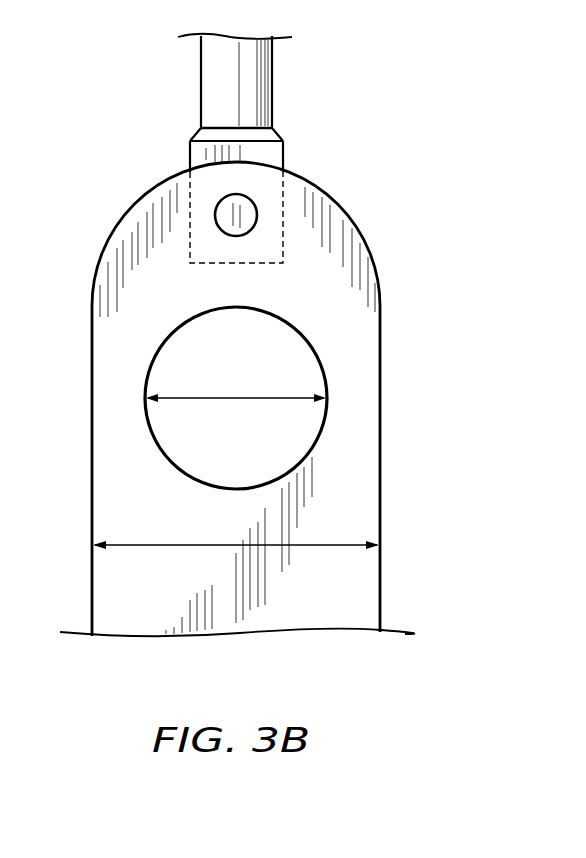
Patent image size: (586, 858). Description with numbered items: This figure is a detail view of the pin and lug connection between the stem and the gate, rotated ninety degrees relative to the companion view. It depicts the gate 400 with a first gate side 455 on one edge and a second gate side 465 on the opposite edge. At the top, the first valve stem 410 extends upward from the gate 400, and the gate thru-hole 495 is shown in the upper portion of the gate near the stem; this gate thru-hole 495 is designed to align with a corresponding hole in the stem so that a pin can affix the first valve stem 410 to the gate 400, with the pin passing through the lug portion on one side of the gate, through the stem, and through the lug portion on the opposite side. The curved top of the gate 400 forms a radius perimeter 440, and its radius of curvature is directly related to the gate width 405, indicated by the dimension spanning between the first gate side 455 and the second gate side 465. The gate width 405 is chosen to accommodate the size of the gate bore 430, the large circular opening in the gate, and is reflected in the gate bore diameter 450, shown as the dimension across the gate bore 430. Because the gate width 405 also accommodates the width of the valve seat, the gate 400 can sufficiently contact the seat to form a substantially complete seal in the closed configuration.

The first valve stem 410 is at (258, 85).
The gate thru-hole 495 is at (243, 213).
The gate 400 is at (120, 235).
The radius perimeter 440 is at (363, 232).
The gate bore 430 is at (285, 370).
The gate bore diameter 450 is at (193, 396).
The first gate side 455 is at (92, 447).
The second gate side 465 is at (383, 468).
The gate width 405 is at (155, 545).